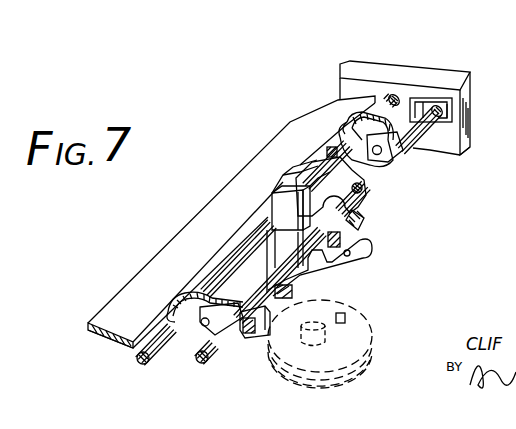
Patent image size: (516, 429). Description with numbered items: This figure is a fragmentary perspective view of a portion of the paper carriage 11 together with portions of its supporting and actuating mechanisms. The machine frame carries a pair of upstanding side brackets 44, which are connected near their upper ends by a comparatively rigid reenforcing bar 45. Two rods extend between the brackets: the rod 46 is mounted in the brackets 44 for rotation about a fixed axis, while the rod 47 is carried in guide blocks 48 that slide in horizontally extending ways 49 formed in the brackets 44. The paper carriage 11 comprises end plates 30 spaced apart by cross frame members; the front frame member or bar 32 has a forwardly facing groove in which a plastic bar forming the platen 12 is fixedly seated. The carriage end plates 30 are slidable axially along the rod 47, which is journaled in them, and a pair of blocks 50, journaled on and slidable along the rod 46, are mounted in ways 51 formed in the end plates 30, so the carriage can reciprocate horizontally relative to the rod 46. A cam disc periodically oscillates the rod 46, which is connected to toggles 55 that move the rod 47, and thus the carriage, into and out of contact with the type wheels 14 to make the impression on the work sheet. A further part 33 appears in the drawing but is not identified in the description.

The paper carriage 11 is at (374, 245).
The platen 12 is at (363, 219).
The type wheels 14 is at (346, 322).
The end plates 30 is at (345, 190).
The frame member or bar 32 is at (352, 254).
The block 33 is at (365, 213).
The side brackets 44 is at (368, 72).
The reenforcing bar 45 is at (311, 113).
The rod 46 is at (393, 95).
The rod 47 is at (440, 106).
The guide blocks 48 is at (448, 107).
The ways 49 is at (468, 148).
The blocks 50 is at (280, 200).
The ways 51 is at (272, 195).
The toggles 55 is at (402, 160).